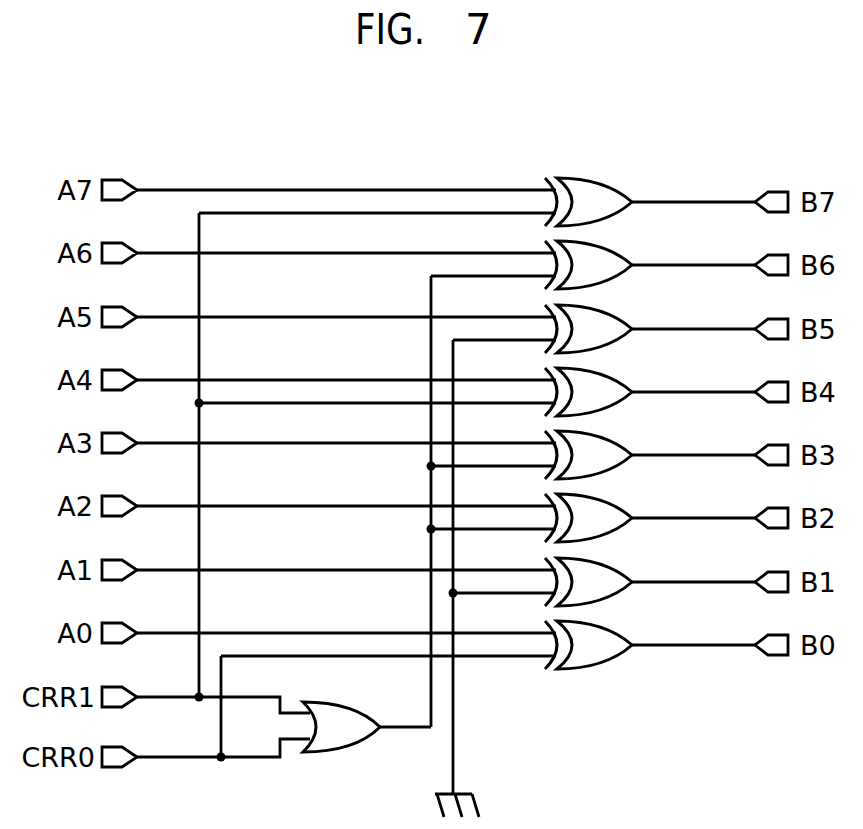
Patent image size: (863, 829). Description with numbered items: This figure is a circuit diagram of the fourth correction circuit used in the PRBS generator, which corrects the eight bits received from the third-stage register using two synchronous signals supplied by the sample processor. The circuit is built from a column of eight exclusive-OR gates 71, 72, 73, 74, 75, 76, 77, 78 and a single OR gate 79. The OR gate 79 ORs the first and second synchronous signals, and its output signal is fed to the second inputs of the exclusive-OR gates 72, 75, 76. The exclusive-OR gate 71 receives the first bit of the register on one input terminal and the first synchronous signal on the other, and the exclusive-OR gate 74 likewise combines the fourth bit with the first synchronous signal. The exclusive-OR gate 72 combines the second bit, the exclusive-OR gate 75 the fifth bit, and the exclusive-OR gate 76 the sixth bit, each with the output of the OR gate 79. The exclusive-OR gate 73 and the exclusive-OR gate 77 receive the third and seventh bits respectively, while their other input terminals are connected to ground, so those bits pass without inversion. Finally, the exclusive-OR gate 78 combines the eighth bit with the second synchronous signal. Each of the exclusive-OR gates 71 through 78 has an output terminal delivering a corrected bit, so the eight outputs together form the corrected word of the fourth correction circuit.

The exclusive-OR gate 71 is at (588, 202).
The exclusive-OR gate 72 is at (588, 265).
The exclusive-OR gate 73 is at (588, 329).
The exclusive-OR gate 74 is at (588, 392).
The exclusive-OR gate 75 is at (588, 455).
The exclusive-OR gate 76 is at (588, 518).
The exclusive-OR gate 77 is at (588, 582).
The exclusive-OR gate 78 is at (588, 645).
The OR gate 79 is at (341, 727).